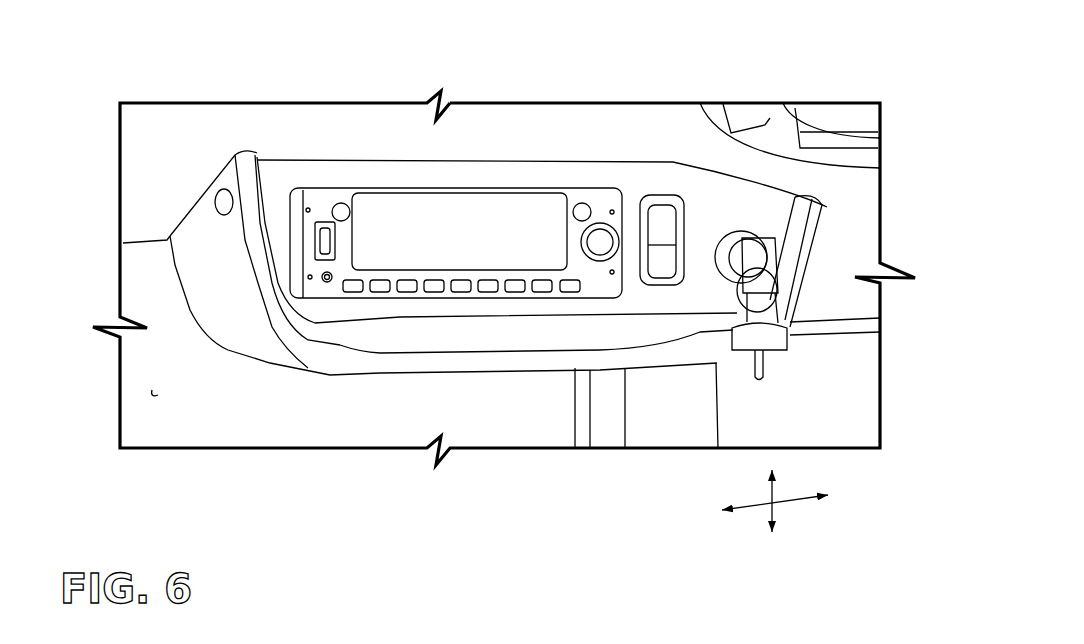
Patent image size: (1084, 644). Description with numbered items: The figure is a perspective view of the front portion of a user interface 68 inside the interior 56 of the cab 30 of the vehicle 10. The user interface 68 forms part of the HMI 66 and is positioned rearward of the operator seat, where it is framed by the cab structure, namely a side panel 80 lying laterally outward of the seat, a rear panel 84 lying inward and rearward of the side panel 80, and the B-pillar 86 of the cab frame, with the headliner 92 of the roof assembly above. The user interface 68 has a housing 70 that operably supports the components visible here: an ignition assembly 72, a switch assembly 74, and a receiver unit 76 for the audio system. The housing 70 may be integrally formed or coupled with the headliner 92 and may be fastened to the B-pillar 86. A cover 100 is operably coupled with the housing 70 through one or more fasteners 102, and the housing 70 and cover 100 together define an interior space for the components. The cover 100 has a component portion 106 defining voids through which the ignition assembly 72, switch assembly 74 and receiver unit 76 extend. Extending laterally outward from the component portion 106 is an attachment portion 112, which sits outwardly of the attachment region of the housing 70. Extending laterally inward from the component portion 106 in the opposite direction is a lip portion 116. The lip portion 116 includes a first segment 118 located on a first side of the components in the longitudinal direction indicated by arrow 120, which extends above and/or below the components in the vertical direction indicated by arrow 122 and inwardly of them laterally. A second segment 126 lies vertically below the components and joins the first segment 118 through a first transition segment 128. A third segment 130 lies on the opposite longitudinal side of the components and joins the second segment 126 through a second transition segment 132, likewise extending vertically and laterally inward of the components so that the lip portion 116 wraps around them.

The vehicle 10 is at (258, 98).
The cab 30 is at (147, 298).
The interior 56 is at (152, 395).
The HMI 66 is at (648, 147).
The user interface 68 is at (168, 270).
The housing 70 is at (187, 247).
The ignition assembly 72 is at (740, 253).
The switch assembly 74 is at (673, 213).
The receiver unit 76 is at (488, 227).
The side panel 80 is at (283, 423).
The rear panel 84 is at (833, 390).
The B-pillar 86 is at (678, 424).
The headliner 92 is at (850, 245).
The cover 100 is at (725, 205).
The fastener 102 is at (220, 192).
The component portion 106 is at (453, 170).
The attachment portion 112 is at (254, 215).
The lip portion 116 is at (598, 362).
The first segment 118 is at (258, 293).
The arrow indicating longitudinal direction 120 is at (790, 503).
The arrow indicating vertical direction 122 is at (777, 503).
The second segment 126 is at (537, 370).
The first transition segment 128 is at (330, 378).
The third segment 130 is at (805, 283).
The second transition segment 132 is at (730, 357).